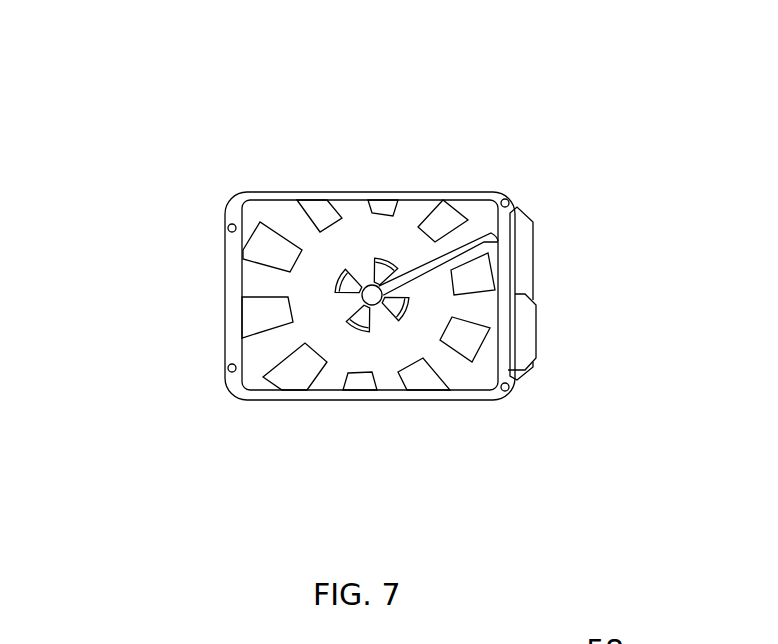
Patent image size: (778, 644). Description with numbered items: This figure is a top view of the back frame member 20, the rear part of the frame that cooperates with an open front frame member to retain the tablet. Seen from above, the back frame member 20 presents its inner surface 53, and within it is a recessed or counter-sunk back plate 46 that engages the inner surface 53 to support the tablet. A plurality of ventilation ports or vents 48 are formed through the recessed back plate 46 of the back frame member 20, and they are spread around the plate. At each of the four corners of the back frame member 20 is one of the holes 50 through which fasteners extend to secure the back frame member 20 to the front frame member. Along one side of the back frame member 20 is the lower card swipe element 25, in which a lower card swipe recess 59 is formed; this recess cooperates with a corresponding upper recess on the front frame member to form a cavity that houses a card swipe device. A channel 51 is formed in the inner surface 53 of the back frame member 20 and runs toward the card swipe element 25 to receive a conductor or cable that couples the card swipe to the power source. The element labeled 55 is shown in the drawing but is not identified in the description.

The back frame member 20 is at (418, 157).
The lower card swipe element 25 is at (534, 279).
The recessed or counter-sunk back plate 46 is at (272, 213).
The ventilation ports or vents 48 is at (310, 203).
The holes 50 is at (225, 222).
The channel 51 is at (483, 233).
The inner surface 53 is at (347, 240).
The fan hub 55 is at (376, 298).
The lower card swipe recess 59 is at (527, 327).